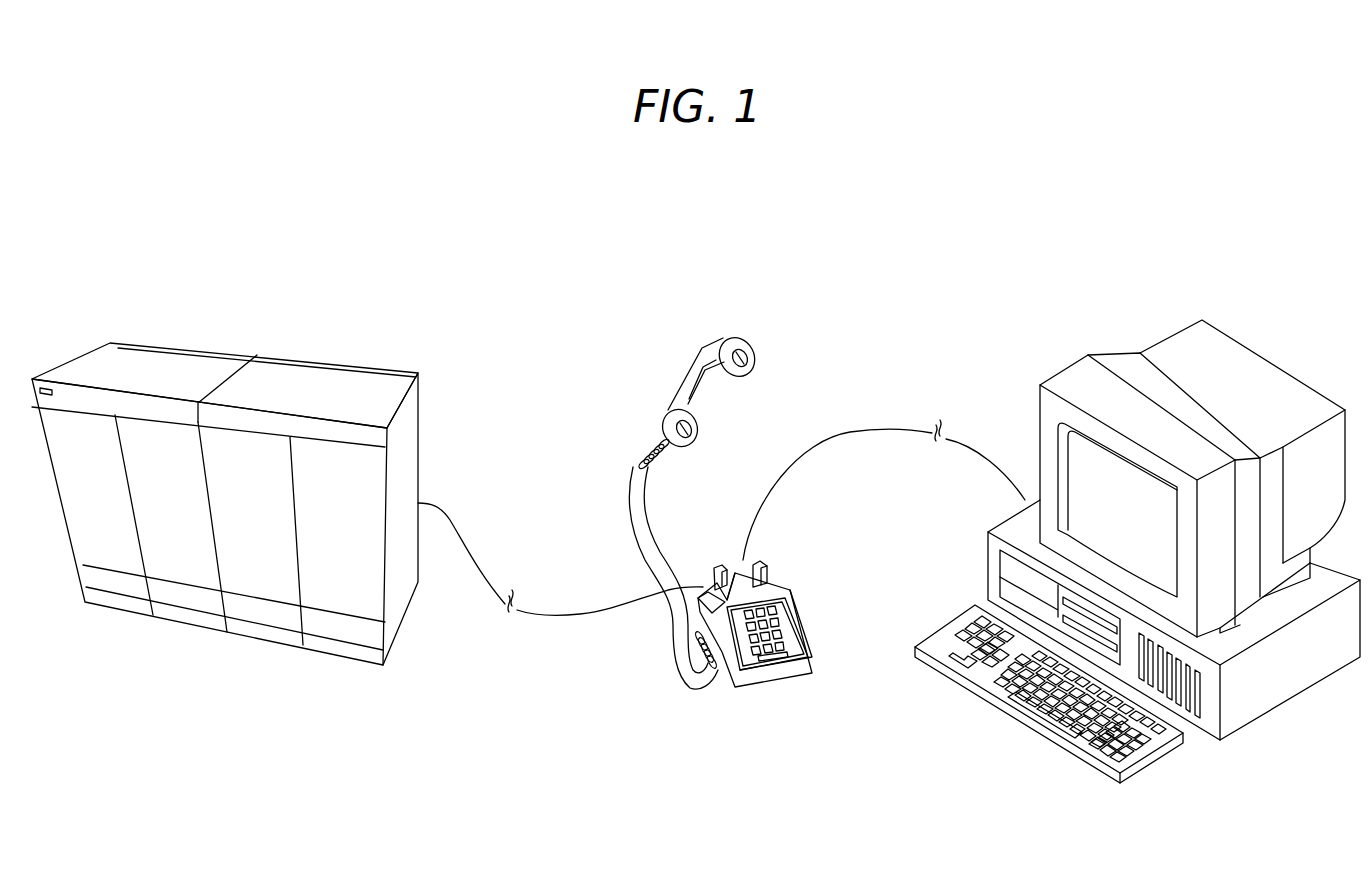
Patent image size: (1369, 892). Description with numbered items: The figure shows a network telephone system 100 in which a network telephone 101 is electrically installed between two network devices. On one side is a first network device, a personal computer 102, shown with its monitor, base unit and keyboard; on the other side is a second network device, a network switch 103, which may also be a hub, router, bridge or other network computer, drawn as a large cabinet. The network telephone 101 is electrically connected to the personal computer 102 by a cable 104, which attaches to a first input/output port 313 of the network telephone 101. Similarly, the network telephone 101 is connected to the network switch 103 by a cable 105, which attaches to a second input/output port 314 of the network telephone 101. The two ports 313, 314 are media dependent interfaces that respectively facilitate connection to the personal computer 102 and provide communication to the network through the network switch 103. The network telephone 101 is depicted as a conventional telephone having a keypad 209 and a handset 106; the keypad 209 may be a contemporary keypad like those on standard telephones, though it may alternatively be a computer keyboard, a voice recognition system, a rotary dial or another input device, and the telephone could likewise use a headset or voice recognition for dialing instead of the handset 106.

The network telephone system 100 is at (828, 265).
The network telephone 101 is at (763, 675).
The personal computer 102 is at (1085, 385).
The network switch 103 is at (330, 378).
The cable 104 is at (843, 437).
The cable 105 is at (600, 612).
The handset 106 is at (693, 370).
The keypad 209 is at (785, 623).
The first input/output port 313 is at (745, 575).
The input/output port 314 is at (710, 590).